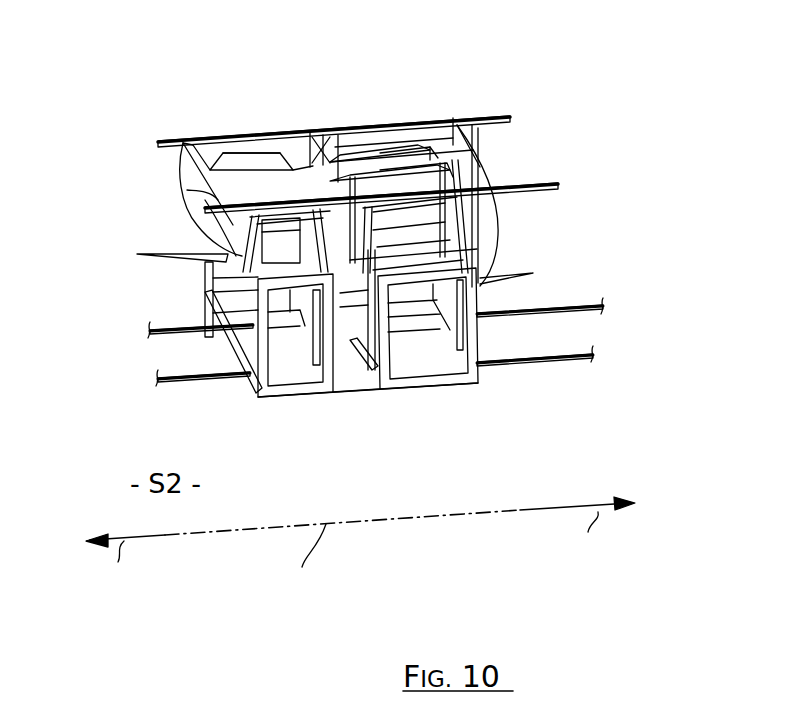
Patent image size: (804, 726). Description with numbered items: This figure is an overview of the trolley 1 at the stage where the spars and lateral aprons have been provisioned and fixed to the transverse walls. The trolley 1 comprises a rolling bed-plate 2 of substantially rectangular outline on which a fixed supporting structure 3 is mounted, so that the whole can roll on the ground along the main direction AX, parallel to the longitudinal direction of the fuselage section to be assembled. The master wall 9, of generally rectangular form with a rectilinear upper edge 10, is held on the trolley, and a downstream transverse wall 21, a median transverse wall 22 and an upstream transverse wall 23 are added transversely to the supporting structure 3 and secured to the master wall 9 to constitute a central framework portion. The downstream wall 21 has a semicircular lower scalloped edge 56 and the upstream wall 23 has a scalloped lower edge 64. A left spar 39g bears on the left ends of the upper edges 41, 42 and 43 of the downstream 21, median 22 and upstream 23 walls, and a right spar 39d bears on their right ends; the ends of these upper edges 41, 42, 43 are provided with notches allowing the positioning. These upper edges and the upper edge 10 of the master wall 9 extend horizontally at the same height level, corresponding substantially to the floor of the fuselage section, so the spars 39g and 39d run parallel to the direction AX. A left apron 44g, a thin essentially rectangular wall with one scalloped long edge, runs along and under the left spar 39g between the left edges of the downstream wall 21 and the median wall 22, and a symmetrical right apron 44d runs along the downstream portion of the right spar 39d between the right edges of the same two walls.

The trolley 1 is at (130, 316).
The rolling bed-plate 2 is at (315, 384).
The supporting structure 3 is at (497, 343).
The master wall 9 is at (390, 167).
The upper edge 10 is at (415, 125).
The downstream transverse wall 21 is at (172, 216).
The median transverse wall 22 is at (350, 130).
The upstream transverse wall 23 is at (518, 222).
The right spar 39d is at (206, 202).
The left spar 39g is at (185, 142).
The upper edge of downstream wall 41 is at (213, 160).
The upper edge of median wall 42 is at (336, 128).
The upper edge of upstream wall 43 is at (470, 130).
The right apron 44d is at (256, 210).
The left apron 44g is at (297, 152).
The lower scalloped edge of downstream wall 56 is at (200, 260).
The lower scalloped edge of upstream wall 64 is at (480, 280).